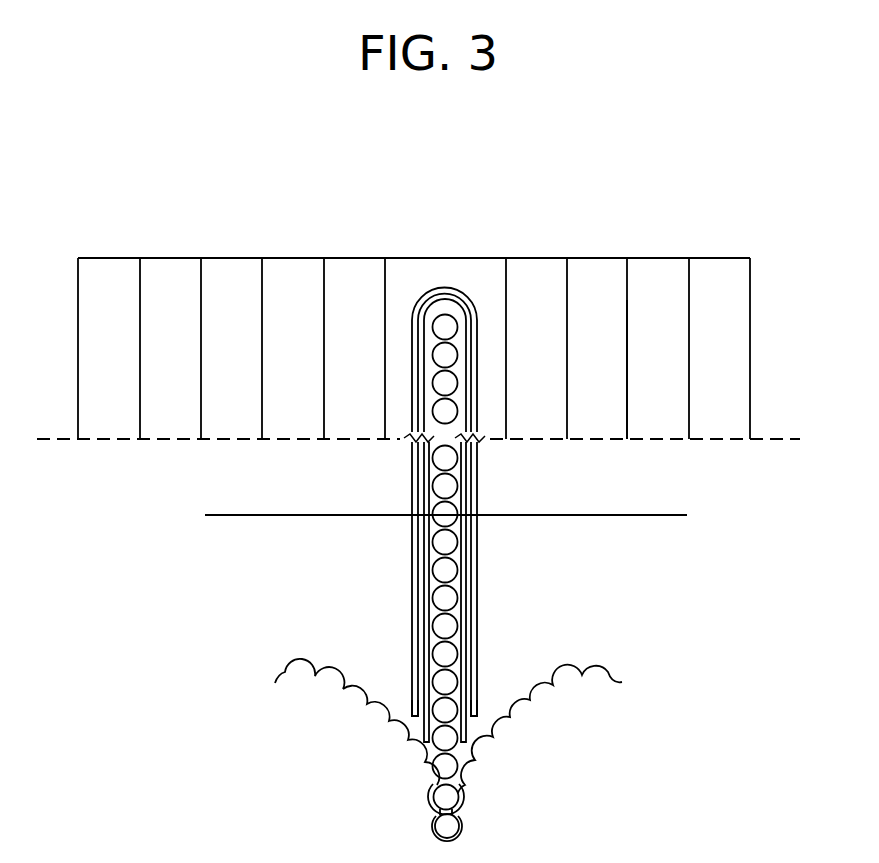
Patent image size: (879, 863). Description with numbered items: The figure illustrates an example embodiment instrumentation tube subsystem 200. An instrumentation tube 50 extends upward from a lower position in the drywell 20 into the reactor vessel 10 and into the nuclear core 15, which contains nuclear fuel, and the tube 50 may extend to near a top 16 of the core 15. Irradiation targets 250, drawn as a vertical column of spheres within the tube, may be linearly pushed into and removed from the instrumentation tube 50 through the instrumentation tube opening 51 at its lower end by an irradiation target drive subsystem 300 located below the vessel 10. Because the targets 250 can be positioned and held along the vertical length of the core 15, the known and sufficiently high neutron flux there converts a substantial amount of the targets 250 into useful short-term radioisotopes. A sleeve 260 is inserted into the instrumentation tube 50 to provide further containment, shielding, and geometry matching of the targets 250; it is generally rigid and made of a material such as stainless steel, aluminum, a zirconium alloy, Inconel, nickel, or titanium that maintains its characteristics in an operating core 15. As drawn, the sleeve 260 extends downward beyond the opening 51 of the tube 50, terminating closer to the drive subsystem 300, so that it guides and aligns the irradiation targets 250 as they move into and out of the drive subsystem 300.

The top of the core 16 is at (440, 258).
The nuclear core 15 is at (595, 420).
The reactor vessel 10 is at (615, 515).
The instrumentation tube 50 is at (478, 488).
The sleeve 260 is at (463, 567).
The irradiation targets 250 is at (447, 543).
The instrumentation tube opening 51 is at (428, 719).
The irradiation target drive subsystem 300 is at (424, 770).
The instrumentation tube subsystem 200 is at (750, 739).
The drywell 20 is at (68, 781).